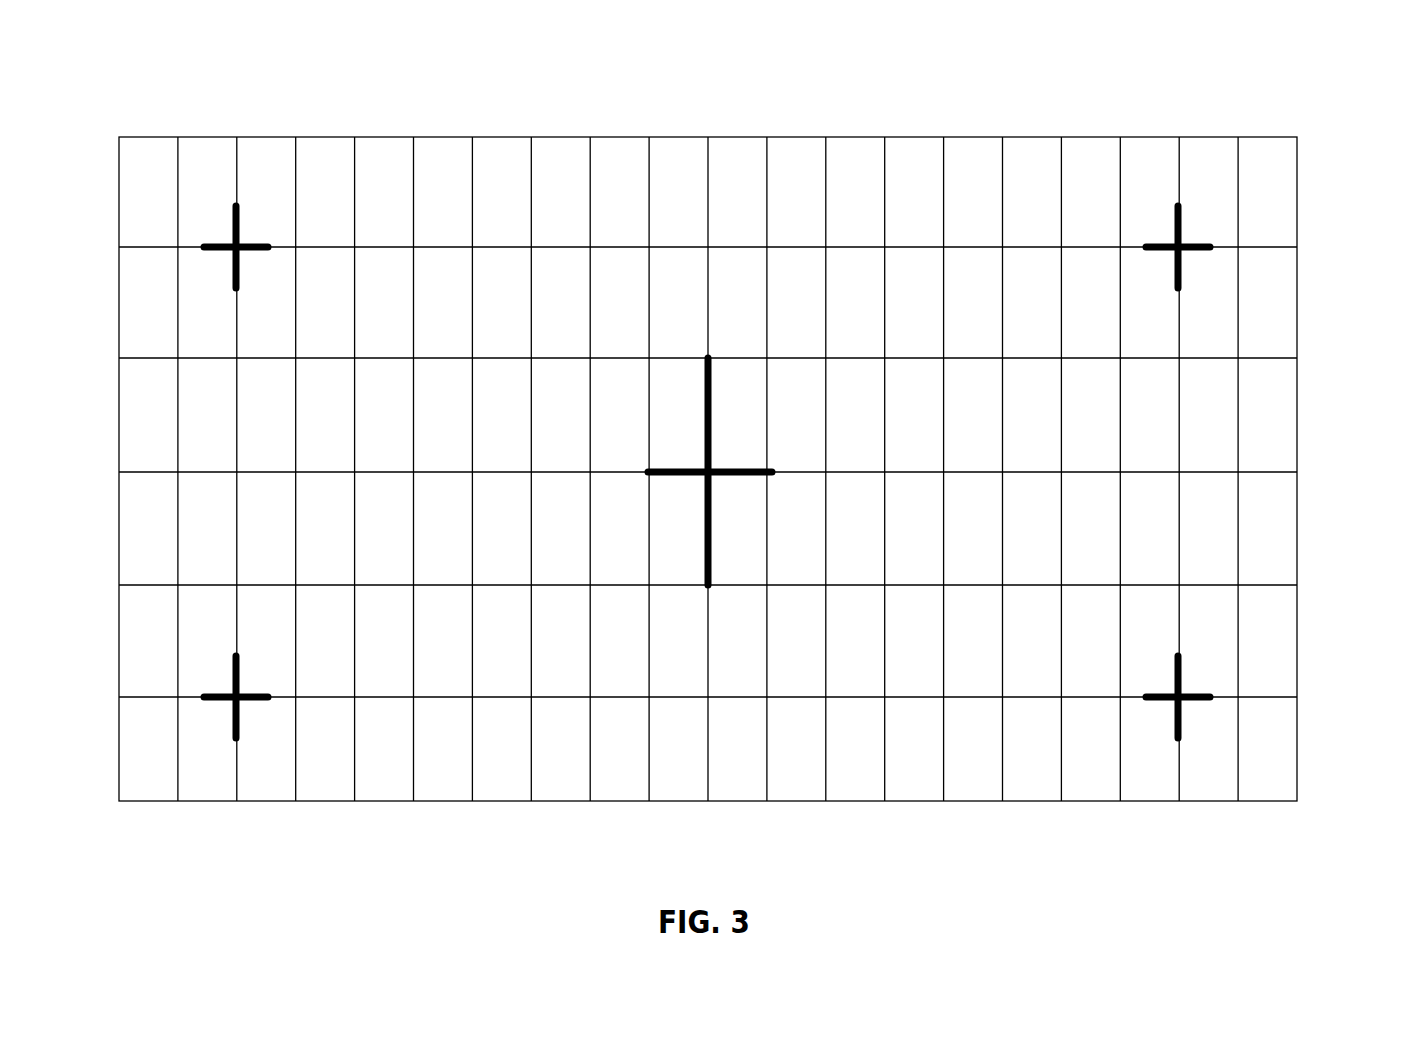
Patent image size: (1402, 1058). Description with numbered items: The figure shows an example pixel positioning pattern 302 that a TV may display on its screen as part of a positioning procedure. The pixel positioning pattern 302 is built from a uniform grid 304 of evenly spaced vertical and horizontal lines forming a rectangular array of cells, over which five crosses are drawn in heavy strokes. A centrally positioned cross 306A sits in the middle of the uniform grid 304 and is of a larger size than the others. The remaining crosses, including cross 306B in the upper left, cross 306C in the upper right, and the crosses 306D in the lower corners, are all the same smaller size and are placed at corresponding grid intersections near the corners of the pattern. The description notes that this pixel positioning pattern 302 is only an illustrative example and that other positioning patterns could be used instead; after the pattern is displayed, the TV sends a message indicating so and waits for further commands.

The pixel positioning pattern 302 is at (175, 99).
The uniform grid 304 is at (850, 137).
The centrally positioned cross 306A is at (711, 451).
The cross 306B is at (235, 230).
The cross 306C is at (1180, 230).
The cross 306D is at (235, 677).